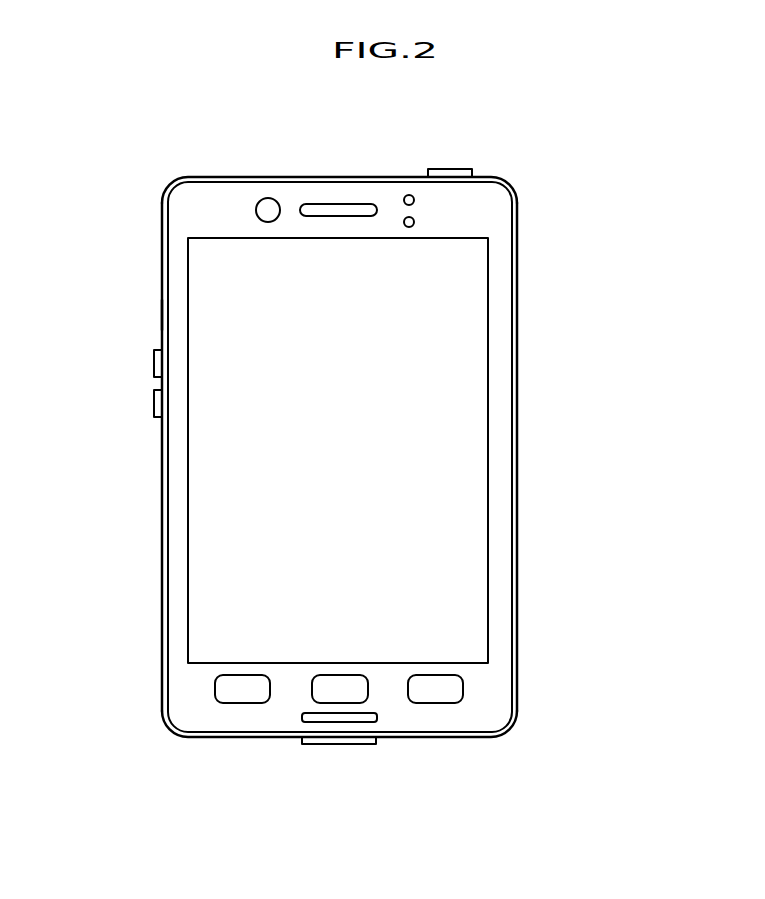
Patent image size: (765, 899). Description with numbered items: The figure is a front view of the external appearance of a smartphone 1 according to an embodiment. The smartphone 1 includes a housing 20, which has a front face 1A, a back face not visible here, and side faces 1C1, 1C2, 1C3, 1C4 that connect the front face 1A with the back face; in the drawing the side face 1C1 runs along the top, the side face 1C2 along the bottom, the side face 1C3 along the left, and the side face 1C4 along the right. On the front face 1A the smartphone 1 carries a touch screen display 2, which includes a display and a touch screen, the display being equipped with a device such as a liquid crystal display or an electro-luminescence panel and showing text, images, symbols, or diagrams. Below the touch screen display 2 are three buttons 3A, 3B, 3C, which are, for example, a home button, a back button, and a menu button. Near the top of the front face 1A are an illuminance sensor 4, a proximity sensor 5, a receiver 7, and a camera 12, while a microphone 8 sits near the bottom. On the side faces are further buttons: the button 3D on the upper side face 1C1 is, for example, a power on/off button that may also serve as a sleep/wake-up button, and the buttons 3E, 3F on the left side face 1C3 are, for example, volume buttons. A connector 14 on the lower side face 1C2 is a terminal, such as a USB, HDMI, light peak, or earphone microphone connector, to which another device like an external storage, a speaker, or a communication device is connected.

The smartphone 1 is at (496, 147).
The front face 1A is at (178, 520).
The side face 1C1 is at (300, 177).
The side face 1C2 is at (200, 737).
The side face 1C3 is at (162, 592).
The side face 1C4 is at (517, 540).
The touch screen display 2 is at (423, 402).
The button 3A is at (242, 703).
The button 3B is at (315, 690).
The button 3C is at (438, 703).
The button 3D is at (450, 169).
The button 3E is at (154, 365).
The button 3F is at (154, 405).
The illuminance sensor 4 is at (409, 195).
The proximity sensor 5 is at (414, 222).
The receiver 7 is at (338, 204).
The microphone 8 is at (377, 717).
The camera 12 is at (266, 198).
The connector 14 is at (338, 744).
The housing 20 is at (162, 312).